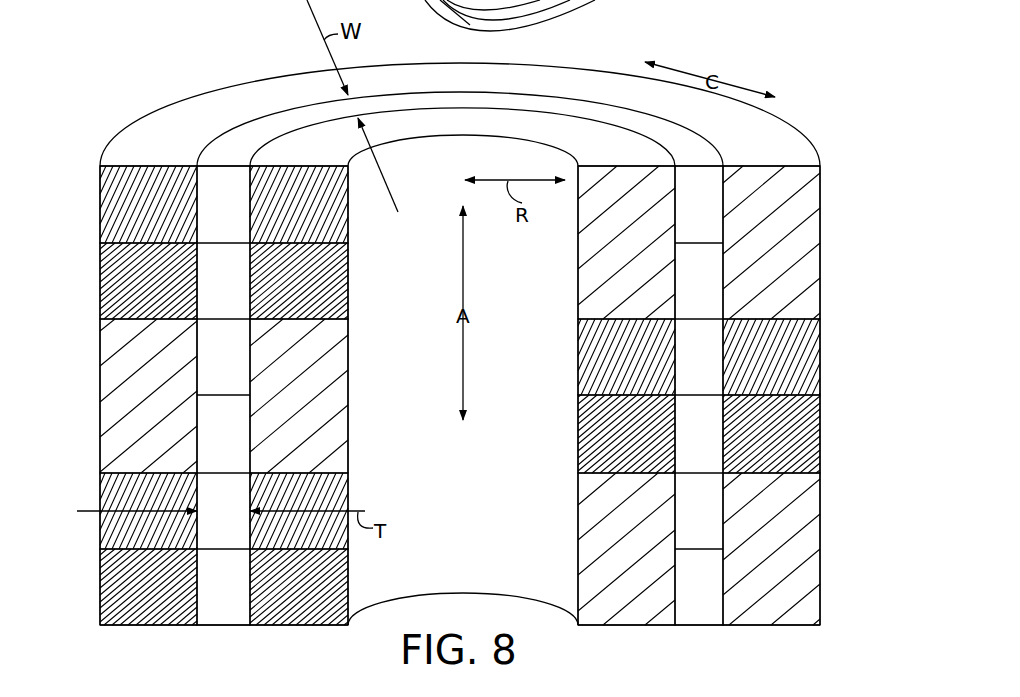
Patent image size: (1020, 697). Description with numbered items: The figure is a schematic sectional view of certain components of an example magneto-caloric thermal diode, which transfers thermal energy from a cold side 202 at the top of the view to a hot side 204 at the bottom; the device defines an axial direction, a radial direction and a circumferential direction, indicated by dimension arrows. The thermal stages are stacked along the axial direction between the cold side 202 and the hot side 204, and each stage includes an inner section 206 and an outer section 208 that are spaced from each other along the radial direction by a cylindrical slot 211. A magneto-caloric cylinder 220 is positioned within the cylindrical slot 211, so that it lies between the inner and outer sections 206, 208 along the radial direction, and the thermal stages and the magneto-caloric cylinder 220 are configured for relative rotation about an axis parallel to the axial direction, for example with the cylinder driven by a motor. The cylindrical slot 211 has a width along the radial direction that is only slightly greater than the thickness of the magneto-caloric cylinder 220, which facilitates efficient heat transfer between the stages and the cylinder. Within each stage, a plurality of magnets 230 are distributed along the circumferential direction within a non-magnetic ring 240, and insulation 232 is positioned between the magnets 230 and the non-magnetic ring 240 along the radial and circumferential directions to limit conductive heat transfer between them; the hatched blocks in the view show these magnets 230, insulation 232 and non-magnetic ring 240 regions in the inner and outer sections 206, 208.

The cold side 202 is at (833, 164).
The hot side 204 is at (829, 621).
The inner section 206 is at (292, 632).
The outer section 208 is at (158, 632).
The cylindrical slot 211 is at (280, 108).
The magneto-caloric cylinder 220 is at (242, 143).
The magnets 230 is at (100, 284).
The insulation 232 is at (100, 206).
The non-magnetic ring 240 is at (100, 396).